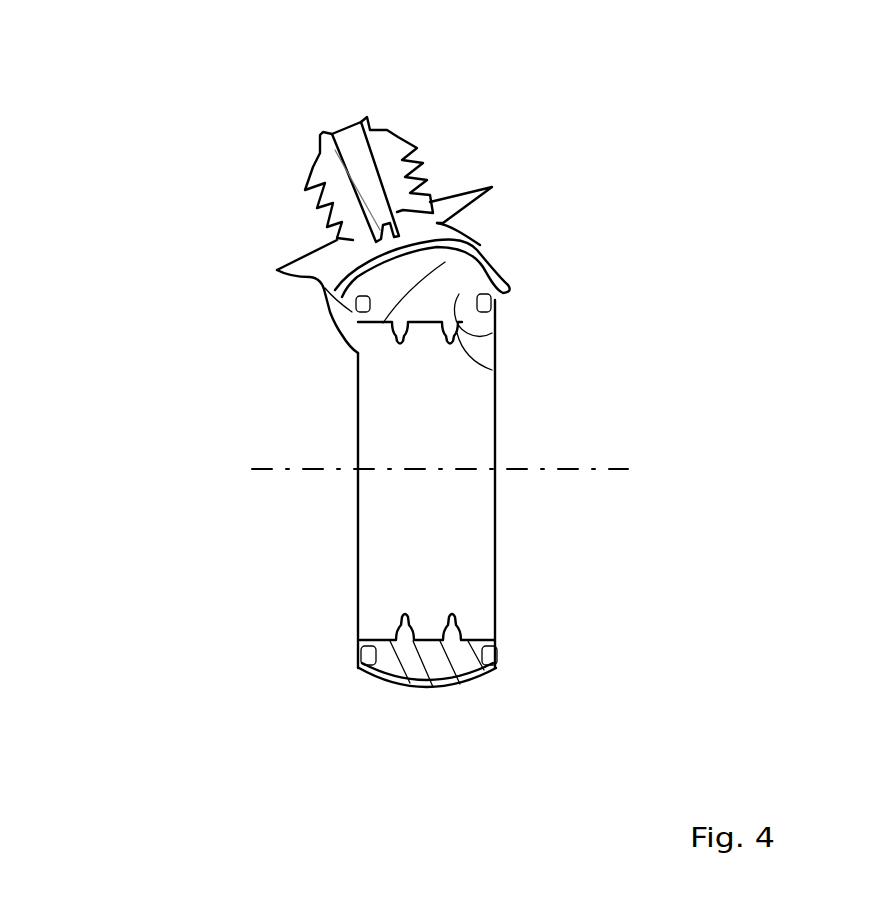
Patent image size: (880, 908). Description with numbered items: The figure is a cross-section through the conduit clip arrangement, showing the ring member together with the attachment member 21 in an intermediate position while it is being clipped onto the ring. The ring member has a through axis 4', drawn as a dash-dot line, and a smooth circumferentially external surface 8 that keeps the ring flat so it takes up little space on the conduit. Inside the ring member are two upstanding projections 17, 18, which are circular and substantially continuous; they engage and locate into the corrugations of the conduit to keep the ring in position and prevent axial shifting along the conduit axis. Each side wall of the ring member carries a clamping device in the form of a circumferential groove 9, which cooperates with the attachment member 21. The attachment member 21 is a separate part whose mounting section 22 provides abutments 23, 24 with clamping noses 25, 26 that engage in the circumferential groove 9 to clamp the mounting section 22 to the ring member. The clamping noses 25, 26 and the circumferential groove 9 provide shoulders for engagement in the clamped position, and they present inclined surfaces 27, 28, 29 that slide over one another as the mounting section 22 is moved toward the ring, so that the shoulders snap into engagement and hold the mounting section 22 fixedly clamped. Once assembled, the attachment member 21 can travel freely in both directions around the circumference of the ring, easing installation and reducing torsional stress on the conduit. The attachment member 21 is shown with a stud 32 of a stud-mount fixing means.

The through axis 4' is at (470, 401).
The circumferentially external surface 8 is at (357, 355).
The circumferential groove 9 is at (493, 307).
The upstanding projection 17 is at (400, 345).
The upstanding projection 18 is at (493, 367).
The attachment member 21 is at (303, 155).
The mounting section 22 is at (468, 228).
The abutment 23 is at (522, 240).
The abutment 24 is at (333, 295).
The clamping nose 25 is at (547, 240).
The clamping nose 26 is at (340, 320).
The inclined surface 27 is at (543, 237).
The inclined surface 28 is at (335, 313).
The inclined surface 29 is at (493, 330).
The stud 32 is at (480, 240).